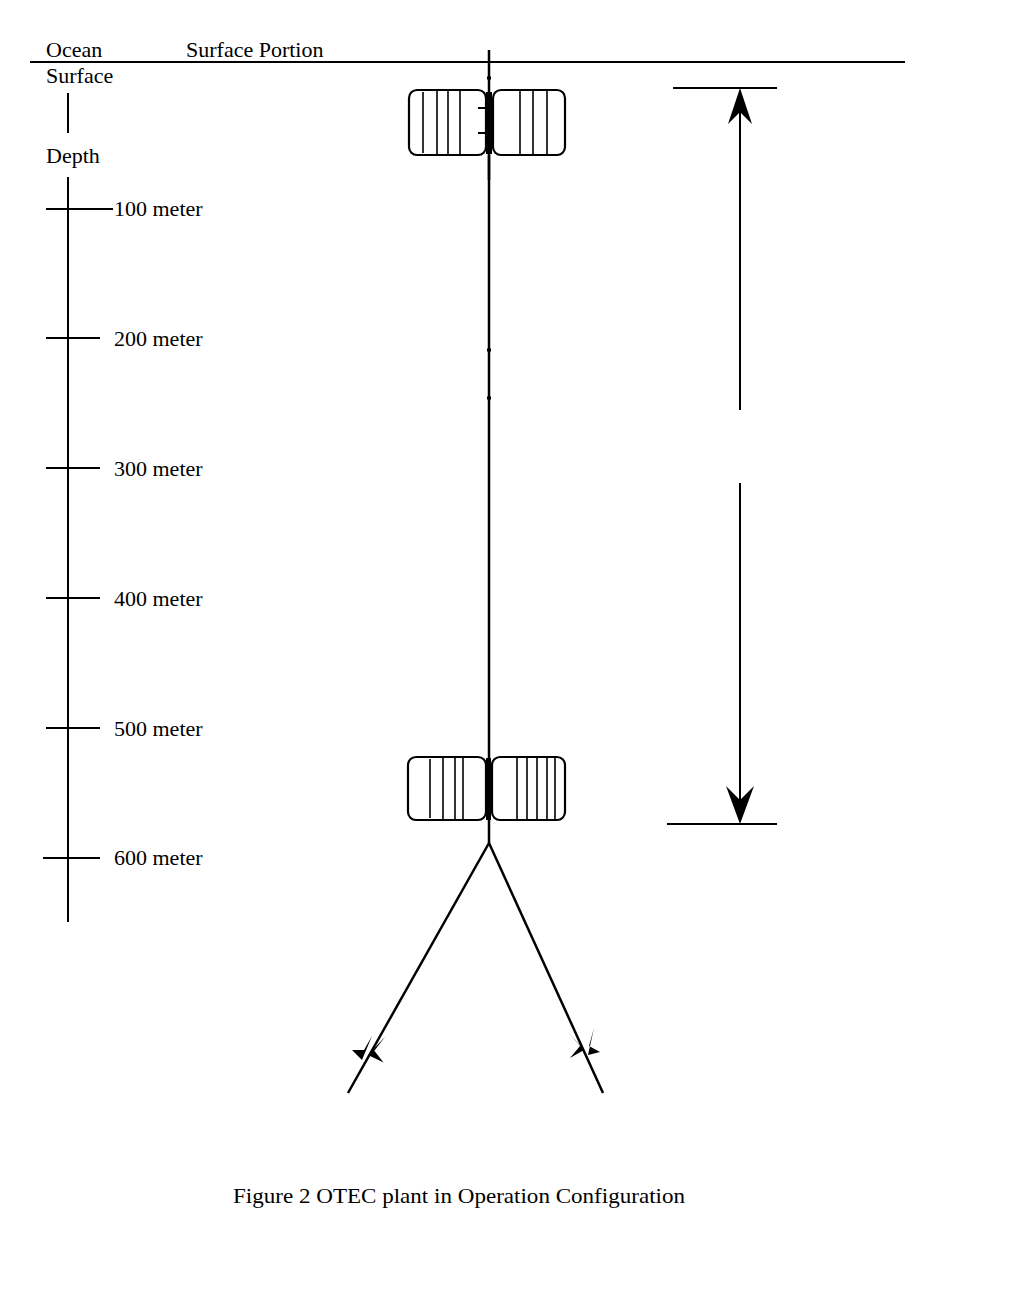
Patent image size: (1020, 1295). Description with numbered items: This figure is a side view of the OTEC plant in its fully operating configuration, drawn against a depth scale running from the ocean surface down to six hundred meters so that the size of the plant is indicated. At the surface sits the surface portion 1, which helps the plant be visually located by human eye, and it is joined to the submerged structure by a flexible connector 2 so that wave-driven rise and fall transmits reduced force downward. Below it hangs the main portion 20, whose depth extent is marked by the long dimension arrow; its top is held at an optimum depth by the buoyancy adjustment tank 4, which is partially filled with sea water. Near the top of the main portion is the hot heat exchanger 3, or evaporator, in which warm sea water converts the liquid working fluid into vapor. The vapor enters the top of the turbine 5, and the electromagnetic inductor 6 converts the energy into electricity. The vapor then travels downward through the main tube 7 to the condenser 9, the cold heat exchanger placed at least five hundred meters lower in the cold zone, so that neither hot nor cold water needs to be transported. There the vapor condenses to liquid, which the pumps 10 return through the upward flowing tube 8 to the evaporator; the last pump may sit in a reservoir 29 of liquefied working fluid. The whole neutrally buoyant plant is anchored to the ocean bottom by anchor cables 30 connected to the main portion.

The surface portion 1 is at (494, 58).
The flexible connector 2 is at (496, 82).
The hot heat exchanger 3 is at (568, 124).
The buoyancy adjustment tank 4 is at (497, 124).
The turbine 5 is at (482, 108).
The electromagnetic inductor 6 is at (483, 133).
The main tube 7 is at (493, 350).
The upward flowing tube 8 is at (491, 398).
The condenser 9 is at (568, 782).
The pumps 10 is at (484, 797).
The main portion 20 is at (722, 456).
The reservoir 29 is at (484, 175).
The anchor cable 30 is at (422, 963).